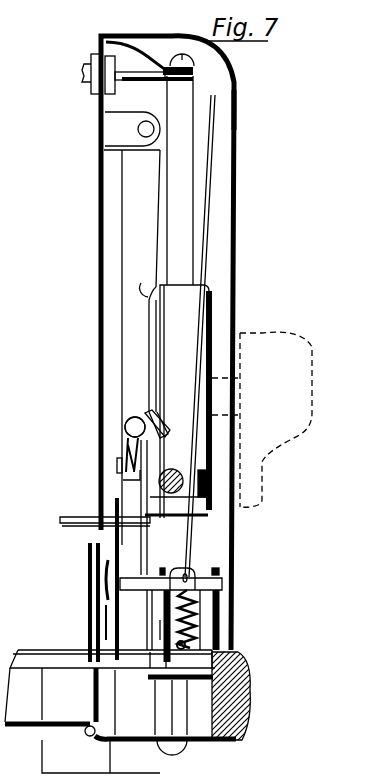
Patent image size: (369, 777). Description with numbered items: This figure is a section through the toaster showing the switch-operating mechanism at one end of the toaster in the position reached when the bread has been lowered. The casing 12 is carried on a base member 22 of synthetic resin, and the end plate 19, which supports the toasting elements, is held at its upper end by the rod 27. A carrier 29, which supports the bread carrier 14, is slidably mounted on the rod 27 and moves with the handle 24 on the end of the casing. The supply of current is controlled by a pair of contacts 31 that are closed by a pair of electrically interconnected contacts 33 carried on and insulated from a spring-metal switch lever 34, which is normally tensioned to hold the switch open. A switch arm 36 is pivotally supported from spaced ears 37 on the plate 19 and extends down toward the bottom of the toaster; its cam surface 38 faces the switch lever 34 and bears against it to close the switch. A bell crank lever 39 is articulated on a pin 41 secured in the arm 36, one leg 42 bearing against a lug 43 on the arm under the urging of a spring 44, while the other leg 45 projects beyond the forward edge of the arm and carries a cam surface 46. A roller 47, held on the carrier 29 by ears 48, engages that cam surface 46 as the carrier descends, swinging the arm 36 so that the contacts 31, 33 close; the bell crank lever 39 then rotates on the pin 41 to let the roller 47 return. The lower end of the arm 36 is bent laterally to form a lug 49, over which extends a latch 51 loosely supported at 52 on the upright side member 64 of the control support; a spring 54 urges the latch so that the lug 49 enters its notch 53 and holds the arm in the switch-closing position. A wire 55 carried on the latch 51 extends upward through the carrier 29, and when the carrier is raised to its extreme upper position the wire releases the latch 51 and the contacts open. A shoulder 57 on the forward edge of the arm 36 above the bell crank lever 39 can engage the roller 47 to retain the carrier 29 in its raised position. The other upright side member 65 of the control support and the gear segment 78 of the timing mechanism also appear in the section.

The casing 12 is at (238, 108).
The bread carrier 14 is at (66, 527).
The end plate 19 is at (98, 172).
The base member 22 is at (250, 680).
The handle 24 is at (262, 333).
The rod 27 is at (196, 105).
The carrier 29 is at (214, 452).
The contacts 31 is at (88, 612).
The contacts 33 is at (112, 580).
The switch lever 34 is at (60, 519).
The switch arm 36 is at (141, 347).
The ears 37 is at (123, 100).
The cam surface 38 is at (115, 508).
The bell crank lever 39 is at (127, 418).
The pin 41 is at (125, 425).
The leg 42 is at (123, 480).
The lug 43 is at (117, 466).
The spring 44 is at (122, 447).
The leg 45 is at (146, 420).
The cam surface 46 is at (158, 413).
The roller 47 is at (177, 469).
The ears 48 is at (214, 498).
The lug 49 is at (133, 592).
The latch 51 is at (224, 583).
The latch support 52 is at (196, 614).
The notch 53 is at (145, 578).
The spring 54 is at (186, 645).
The wire 55 is at (208, 224).
The shoulder 57 is at (142, 337).
The upright side member 64 is at (220, 598).
The upright side member 65 is at (160, 626).
The gear segment 78 is at (160, 660).